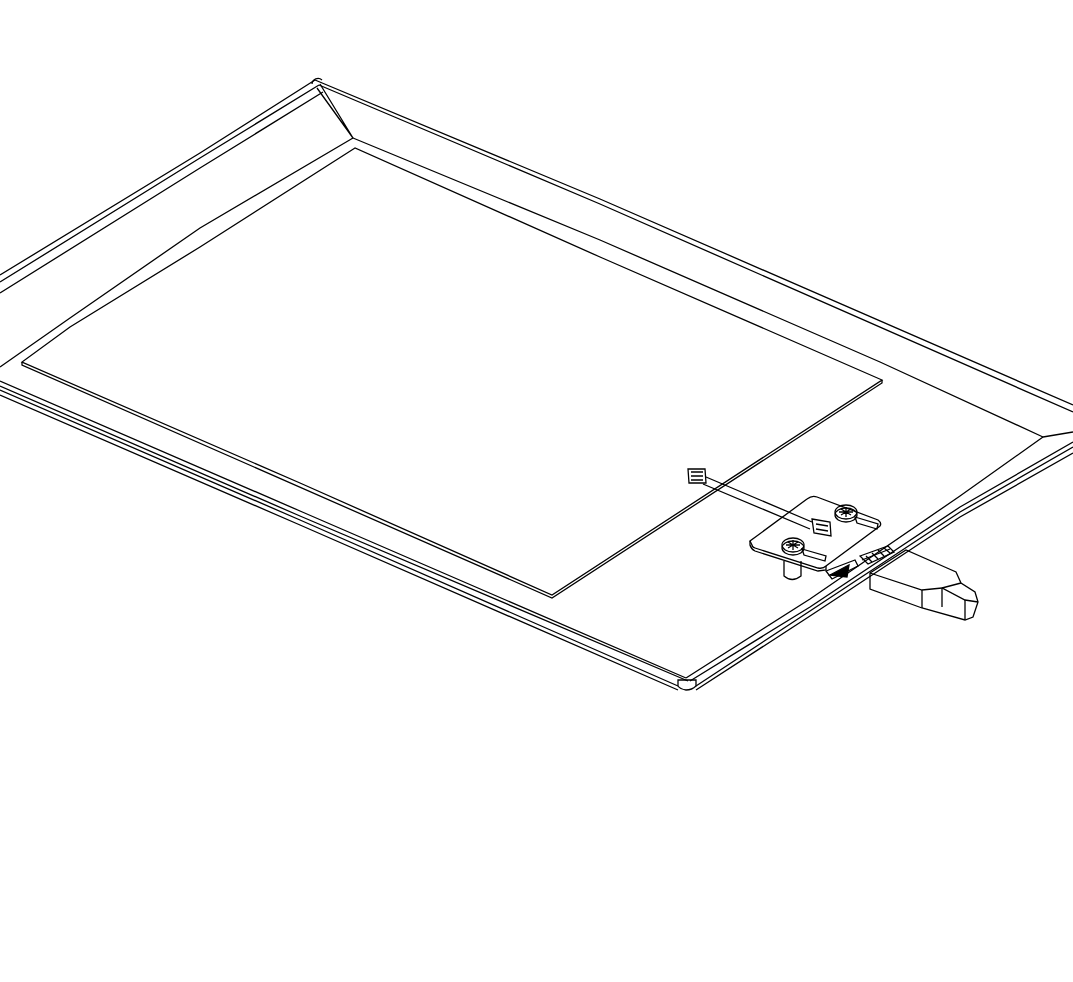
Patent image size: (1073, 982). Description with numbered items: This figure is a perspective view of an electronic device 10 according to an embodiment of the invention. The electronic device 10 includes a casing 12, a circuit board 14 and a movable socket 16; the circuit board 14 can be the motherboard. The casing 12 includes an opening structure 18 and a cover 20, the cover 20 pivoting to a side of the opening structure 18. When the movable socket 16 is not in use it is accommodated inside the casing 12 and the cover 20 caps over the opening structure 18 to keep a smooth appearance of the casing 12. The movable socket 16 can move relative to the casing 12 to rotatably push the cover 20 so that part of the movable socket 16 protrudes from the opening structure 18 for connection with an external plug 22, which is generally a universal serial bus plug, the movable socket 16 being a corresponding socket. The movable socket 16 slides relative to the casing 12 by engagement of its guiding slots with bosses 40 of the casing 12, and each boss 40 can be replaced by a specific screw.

The electronic device 10 is at (877, 150).
The casing 12 is at (776, 303).
The circuit board 14 is at (691, 386).
The movable socket 16 is at (857, 491).
The opening structure 18 is at (813, 585).
The cover 20 is at (863, 592).
The external plug 22 is at (933, 603).
The boss 40 is at (786, 568).